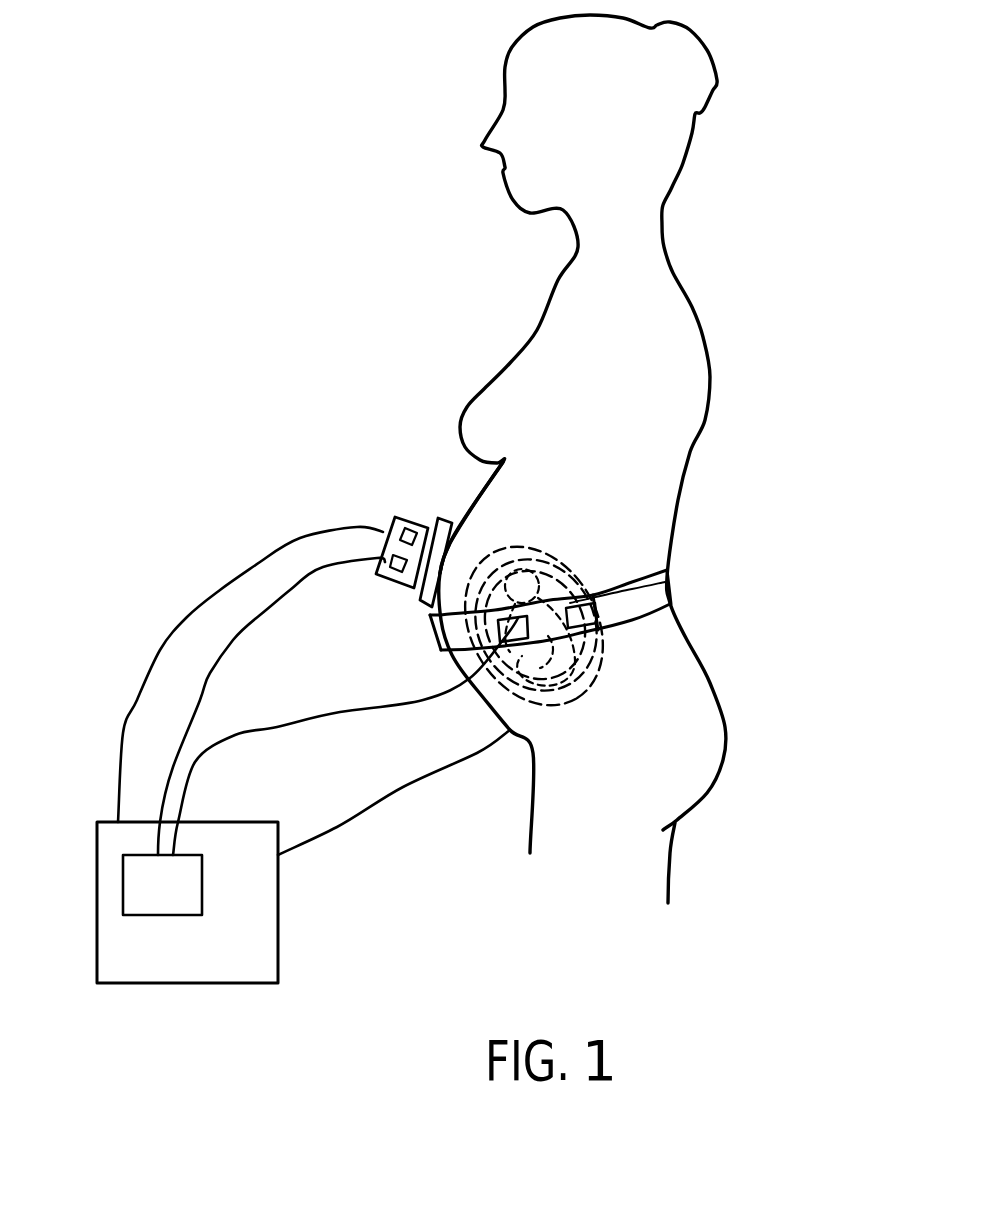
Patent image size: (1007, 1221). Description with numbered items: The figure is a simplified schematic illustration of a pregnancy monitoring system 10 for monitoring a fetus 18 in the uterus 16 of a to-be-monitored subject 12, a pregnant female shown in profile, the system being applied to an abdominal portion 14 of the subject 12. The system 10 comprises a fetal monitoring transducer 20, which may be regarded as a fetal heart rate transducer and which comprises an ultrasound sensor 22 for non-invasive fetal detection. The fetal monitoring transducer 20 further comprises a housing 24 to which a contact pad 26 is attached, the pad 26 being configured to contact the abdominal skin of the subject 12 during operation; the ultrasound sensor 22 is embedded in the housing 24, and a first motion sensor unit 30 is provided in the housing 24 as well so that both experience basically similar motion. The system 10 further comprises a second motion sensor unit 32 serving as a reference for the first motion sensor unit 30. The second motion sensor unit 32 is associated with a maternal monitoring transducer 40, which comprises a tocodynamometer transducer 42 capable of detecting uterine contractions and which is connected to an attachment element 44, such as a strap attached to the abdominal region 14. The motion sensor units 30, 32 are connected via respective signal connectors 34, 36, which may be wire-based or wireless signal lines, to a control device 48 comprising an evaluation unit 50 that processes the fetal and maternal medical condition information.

The pregnancy monitoring system 10 is at (195, 292).
The to-be-monitored subject 12 is at (465, 283).
The abdominal portion 14 is at (456, 525).
The uterus 16 is at (573, 570).
The fetus 18 is at (582, 665).
The fetal monitoring transducer 20 is at (346, 538).
The ultrasound sensor 22 is at (408, 520).
The housing 24 is at (385, 545).
The pad 26 is at (418, 595).
The first motion sensor unit 30 is at (388, 580).
The second motion sensor unit 32 is at (522, 618).
The signal connector 34 is at (207, 678).
The signal connector 36 is at (275, 730).
The maternal monitoring transducer 40 is at (616, 611).
The tocodynamometer transducer 42 is at (673, 600).
The attachment element 44 is at (668, 573).
The control device 48 is at (180, 959).
The evaluation unit 50 is at (170, 898).